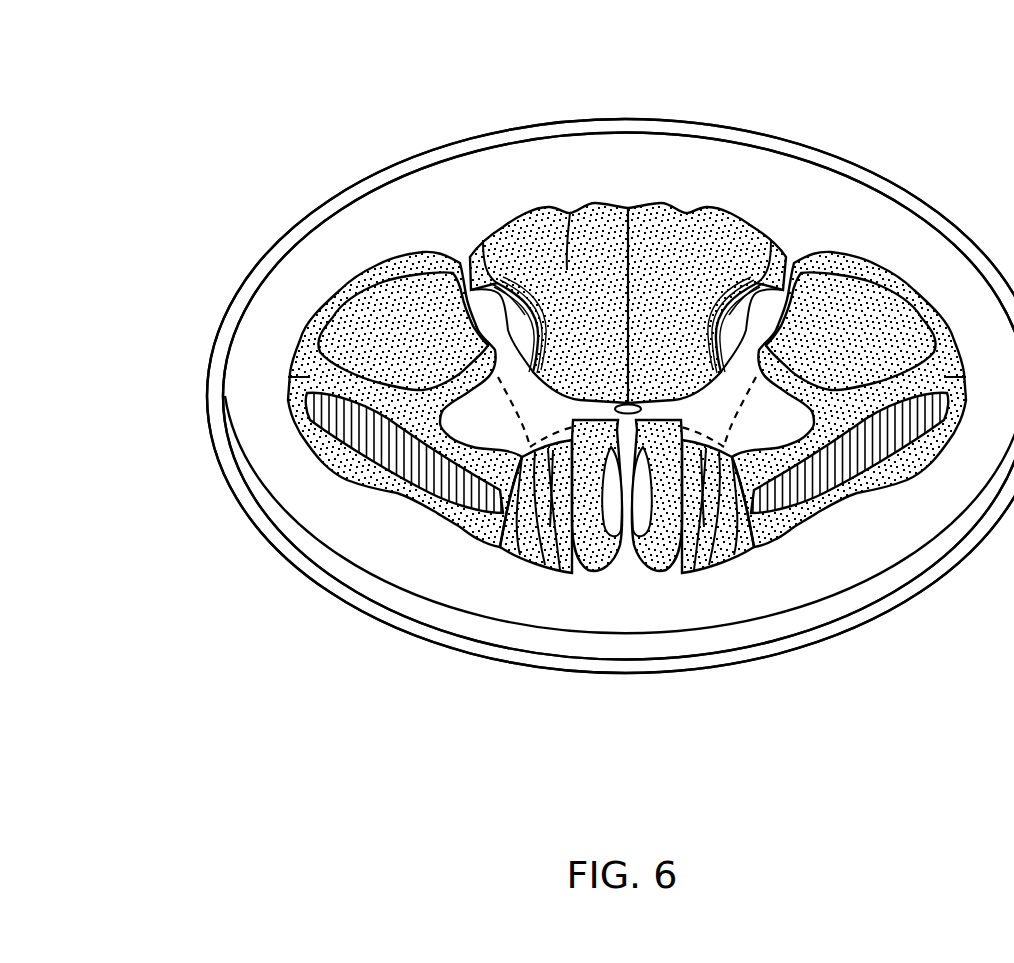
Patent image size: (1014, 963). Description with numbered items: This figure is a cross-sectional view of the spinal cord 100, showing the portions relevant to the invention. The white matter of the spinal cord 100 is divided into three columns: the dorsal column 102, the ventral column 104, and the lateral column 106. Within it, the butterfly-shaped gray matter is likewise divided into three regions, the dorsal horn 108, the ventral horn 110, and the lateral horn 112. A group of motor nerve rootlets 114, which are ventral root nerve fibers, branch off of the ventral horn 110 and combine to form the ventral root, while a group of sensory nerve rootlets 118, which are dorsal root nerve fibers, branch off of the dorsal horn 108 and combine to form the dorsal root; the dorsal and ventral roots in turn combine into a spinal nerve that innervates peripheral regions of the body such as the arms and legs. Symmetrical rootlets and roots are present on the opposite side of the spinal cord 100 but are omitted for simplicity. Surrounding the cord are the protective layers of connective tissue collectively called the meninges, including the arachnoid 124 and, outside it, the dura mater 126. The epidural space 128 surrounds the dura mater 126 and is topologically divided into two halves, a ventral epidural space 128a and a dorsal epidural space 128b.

The spinal cord 100 is at (591, 160).
The dorsal column 102 is at (690, 270).
The ventral column 104 is at (670, 560).
The lateral column 106 is at (383, 352).
The dorsal horn 108 is at (505, 283).
The ventral horn 110 is at (528, 520).
The lateral horn 112 is at (777, 427).
The motor nerve rootlets 114 is at (553, 450).
The sensory nerve rootlets 118 is at (533, 285).
The arachnoid 124 is at (370, 317).
The dura mater 126 is at (363, 620).
The epidural space 128 is at (387, 136).
The ventral epidural space 128a is at (685, 647).
The dorsal epidural space 128b is at (422, 197).